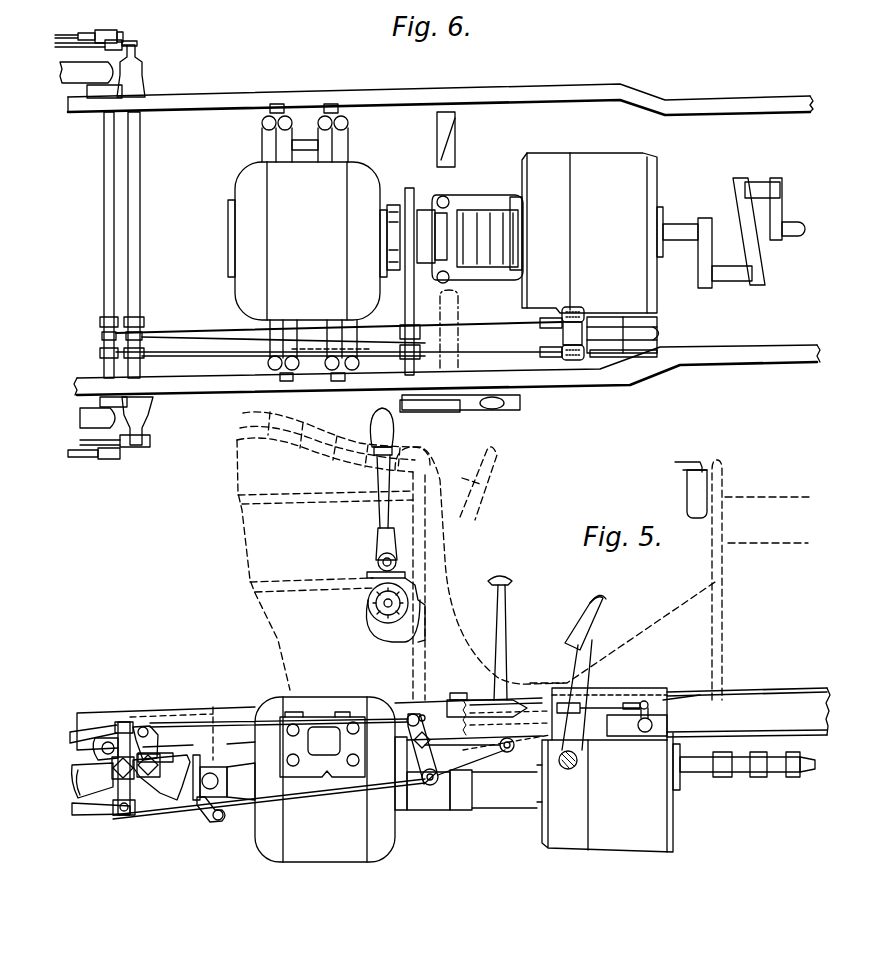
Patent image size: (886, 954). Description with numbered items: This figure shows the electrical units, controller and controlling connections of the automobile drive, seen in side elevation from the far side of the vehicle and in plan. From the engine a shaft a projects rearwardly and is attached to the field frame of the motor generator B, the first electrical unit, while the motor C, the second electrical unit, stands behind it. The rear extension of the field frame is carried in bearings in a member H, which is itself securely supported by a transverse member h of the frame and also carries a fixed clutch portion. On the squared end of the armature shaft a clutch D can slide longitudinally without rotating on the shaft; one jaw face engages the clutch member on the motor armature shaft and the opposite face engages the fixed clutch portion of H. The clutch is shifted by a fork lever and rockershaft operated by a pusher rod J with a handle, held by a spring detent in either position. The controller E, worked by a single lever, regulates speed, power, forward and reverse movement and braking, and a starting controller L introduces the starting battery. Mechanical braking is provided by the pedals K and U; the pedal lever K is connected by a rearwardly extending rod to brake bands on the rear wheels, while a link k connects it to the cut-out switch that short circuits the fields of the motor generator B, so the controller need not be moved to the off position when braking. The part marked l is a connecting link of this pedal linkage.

In FIG. 6, the motor generator B is at (588, 177).
In FIG. 5, the motor generator B is at (602, 838).
In FIG. 6, the motor C is at (290, 200).
In FIG. 5, the motor C is at (303, 841).
In FIG. 6, the clutch D is at (393, 203).
In FIG. 6, the bearing member H is at (446, 196).
In FIG. 6, the transverse frame member h is at (453, 168).
In FIG. 6, the brake pedal U is at (140, 284).
In FIG. 6, the engine shaft a is at (663, 248).
In FIG. 5, the engine shaft a is at (682, 768).
In FIG. 6, the pedal lever K is at (574, 362).
In FIG. 5, the pedal lever K is at (601, 615).
In FIG. 6, the link k is at (606, 355).
In FIG. 5, the link k is at (605, 686).
In FIG. 6, the link l is at (645, 346).
In FIG. 5, the link l is at (665, 700).
In FIG. 5, the starting controller L is at (690, 457).
In FIG. 5, the controller E is at (420, 590).
In FIG. 5, the pusher rod J is at (508, 592).